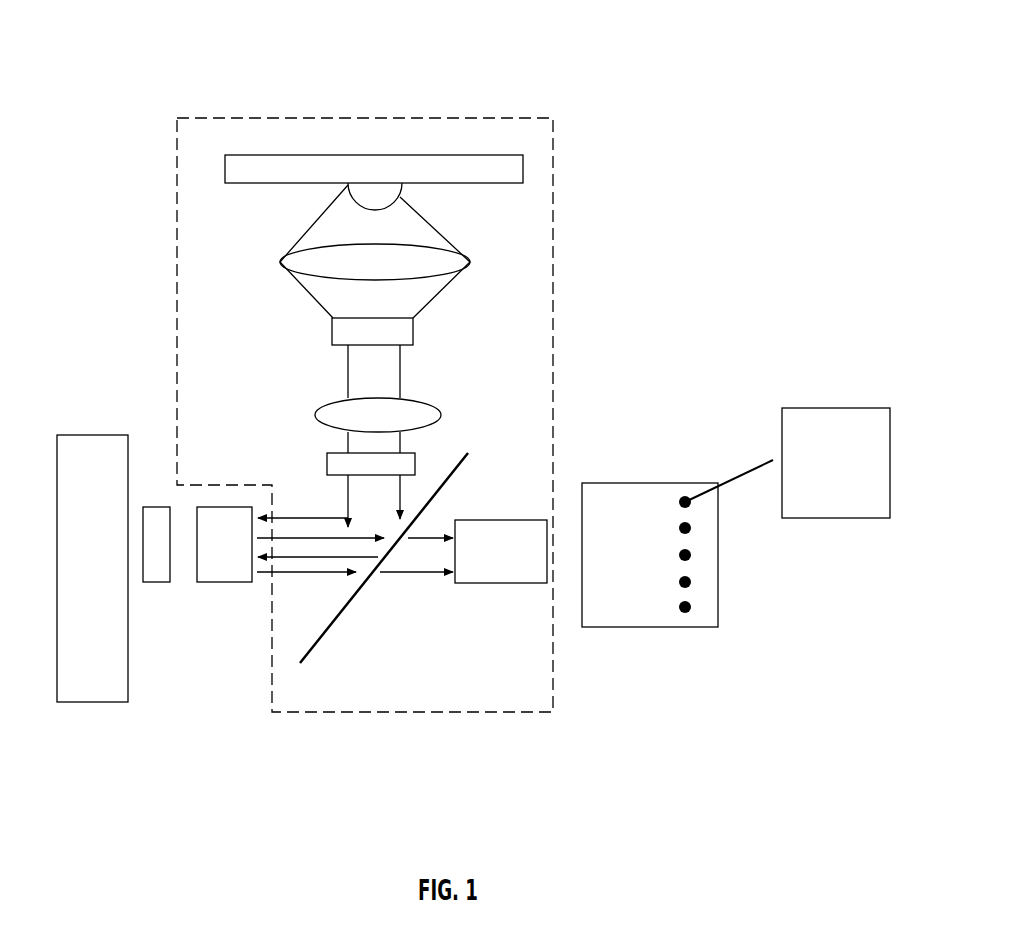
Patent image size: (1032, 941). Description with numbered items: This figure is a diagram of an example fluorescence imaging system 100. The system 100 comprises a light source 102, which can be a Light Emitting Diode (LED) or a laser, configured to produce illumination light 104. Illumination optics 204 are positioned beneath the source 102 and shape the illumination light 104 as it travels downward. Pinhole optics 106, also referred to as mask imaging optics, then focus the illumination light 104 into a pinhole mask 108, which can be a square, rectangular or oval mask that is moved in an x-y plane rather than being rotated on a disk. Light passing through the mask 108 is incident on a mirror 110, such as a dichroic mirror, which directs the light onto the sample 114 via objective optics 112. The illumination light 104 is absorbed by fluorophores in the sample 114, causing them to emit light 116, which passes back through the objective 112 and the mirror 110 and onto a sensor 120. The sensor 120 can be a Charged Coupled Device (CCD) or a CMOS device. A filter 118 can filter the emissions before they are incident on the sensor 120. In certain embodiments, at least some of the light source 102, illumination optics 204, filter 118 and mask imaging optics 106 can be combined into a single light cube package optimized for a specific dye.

The fluorescence imaging system 100 is at (257, 105).
The light source 102 is at (383, 188).
The illumination light 104 is at (422, 227).
The illumination optics 204 is at (277, 268).
The pinhole mask 108 is at (417, 330).
The pinhole optics 106 is at (437, 415).
The filter 118 is at (518, 519).
The emitted light 116 is at (309, 576).
The mirror 110 is at (324, 638).
The objective optics 112 is at (230, 503).
The sample 114 is at (156, 584).
The sensor 120 is at (609, 496).